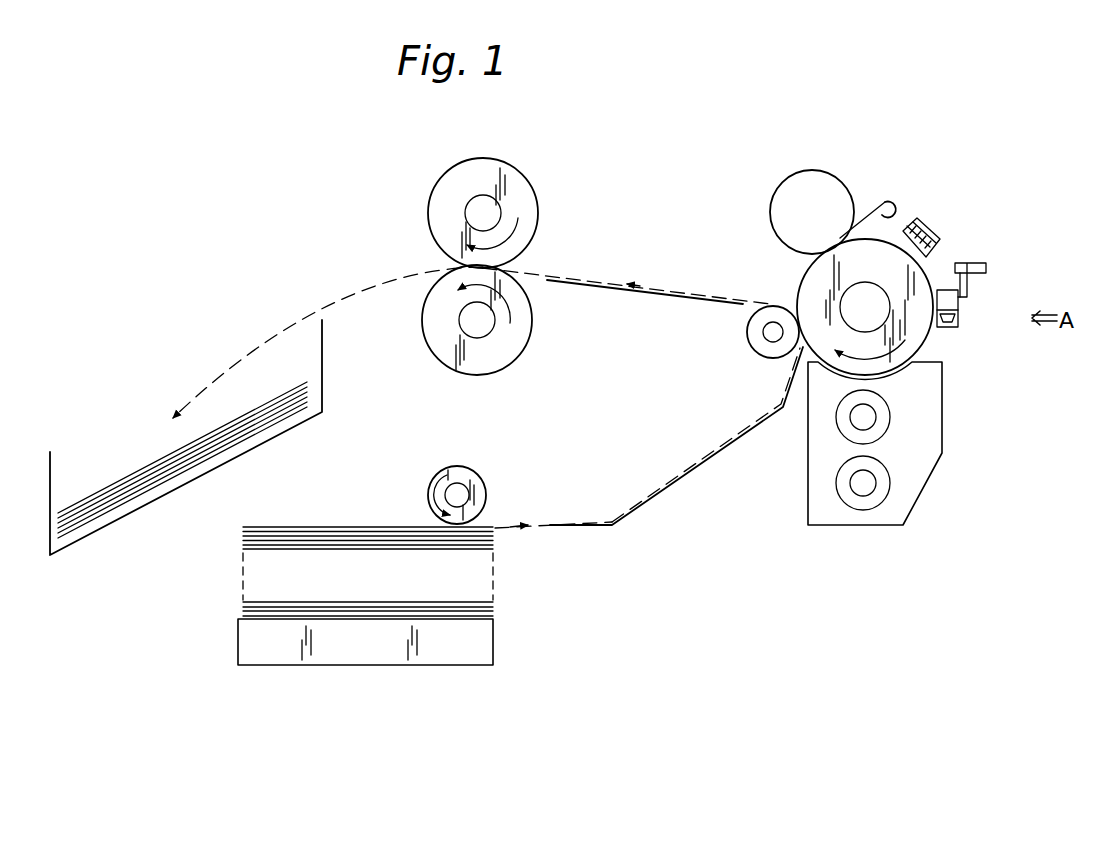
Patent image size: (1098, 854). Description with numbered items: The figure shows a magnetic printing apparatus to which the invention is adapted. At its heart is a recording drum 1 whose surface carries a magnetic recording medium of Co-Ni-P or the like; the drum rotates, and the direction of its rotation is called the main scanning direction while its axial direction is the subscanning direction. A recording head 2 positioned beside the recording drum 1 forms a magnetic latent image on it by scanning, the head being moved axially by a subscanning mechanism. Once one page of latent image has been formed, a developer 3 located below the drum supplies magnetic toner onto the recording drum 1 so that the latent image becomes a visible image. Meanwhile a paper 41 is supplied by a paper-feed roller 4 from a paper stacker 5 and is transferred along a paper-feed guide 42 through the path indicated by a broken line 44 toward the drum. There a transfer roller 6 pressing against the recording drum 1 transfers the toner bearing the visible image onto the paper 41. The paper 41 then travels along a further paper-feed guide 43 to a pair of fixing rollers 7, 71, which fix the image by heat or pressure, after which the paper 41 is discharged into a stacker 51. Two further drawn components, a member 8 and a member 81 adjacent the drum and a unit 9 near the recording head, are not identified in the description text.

The recording drum 1 is at (930, 343).
The recording head 2 is at (960, 318).
The developer 3 is at (943, 412).
The paper-feed roller 4 is at (470, 467).
The paper stacker 5 is at (494, 645).
The transfer roller 6 is at (752, 350).
The fixing roller 7 is at (526, 170).
The cleaning blade 8 is at (880, 198).
The charger 9 is at (931, 228).
The paper 41 is at (497, 525).
The paper-feed guide 42 is at (625, 520).
The paper-feed guide 43 is at (646, 295).
The broken line 44 is at (640, 502).
The stacker 51 is at (326, 399).
The fixing roller 71 is at (527, 350).
The cleaning roller 81 is at (828, 170).